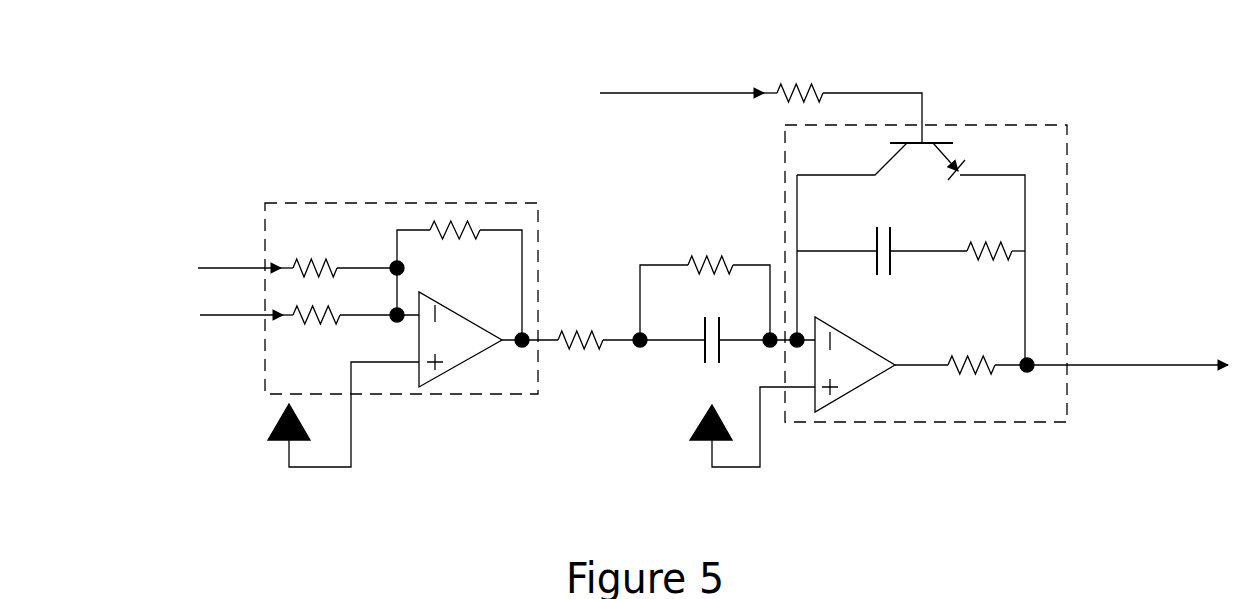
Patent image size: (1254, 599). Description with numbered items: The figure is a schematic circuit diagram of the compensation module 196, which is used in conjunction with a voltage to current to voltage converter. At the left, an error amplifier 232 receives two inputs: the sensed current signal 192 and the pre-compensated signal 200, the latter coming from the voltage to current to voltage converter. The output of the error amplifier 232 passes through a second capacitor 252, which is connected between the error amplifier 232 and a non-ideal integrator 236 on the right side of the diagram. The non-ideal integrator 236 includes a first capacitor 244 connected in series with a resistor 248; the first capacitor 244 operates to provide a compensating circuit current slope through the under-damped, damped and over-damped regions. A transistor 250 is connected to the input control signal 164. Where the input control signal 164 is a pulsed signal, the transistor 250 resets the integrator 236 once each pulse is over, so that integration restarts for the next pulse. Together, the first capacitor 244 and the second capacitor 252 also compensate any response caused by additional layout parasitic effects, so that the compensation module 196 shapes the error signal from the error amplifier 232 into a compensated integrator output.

The compensation module 196 is at (266, 72).
The pre-compensated signal 200 is at (250, 268).
The sensed current signal 192 is at (252, 315).
The error amplifier 232 is at (385, 203).
The second capacitor 252 is at (705, 350).
The input control signal 164 is at (712, 93).
The non-ideal integrator 236 is at (1012, 125).
The transistor 250 is at (930, 145).
The first capacitor 244 is at (877, 240).
The resistor 248 is at (1012, 242).